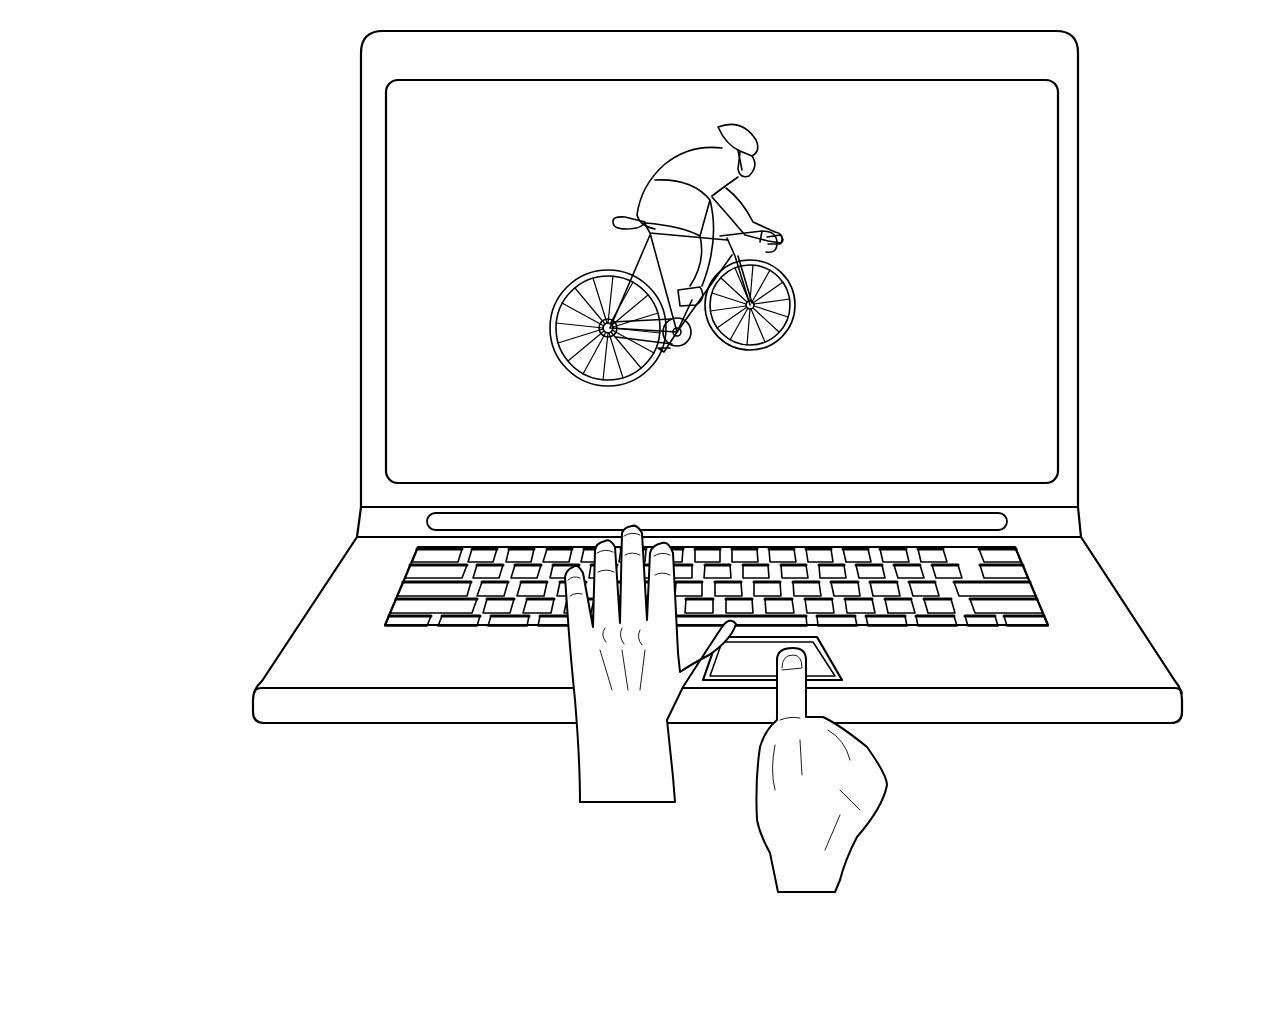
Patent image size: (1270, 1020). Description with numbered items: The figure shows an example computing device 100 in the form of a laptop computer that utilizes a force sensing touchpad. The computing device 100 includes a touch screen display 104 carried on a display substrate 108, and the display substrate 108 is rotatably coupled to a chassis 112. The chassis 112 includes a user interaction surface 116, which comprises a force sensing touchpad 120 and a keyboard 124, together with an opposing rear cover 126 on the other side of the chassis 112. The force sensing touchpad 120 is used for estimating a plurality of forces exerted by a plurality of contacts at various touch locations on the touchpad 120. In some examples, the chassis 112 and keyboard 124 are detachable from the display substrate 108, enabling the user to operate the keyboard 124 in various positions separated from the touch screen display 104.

The computing device 100 is at (283, 120).
The touch screen display 104 is at (983, 168).
The display substrate 108 is at (361, 146).
The chassis 112 is at (1173, 663).
The user interaction surface 116 is at (277, 678).
The force sensing touchpad 120 is at (722, 663).
The keyboard 124 is at (388, 560).
The rear cover 126 is at (1128, 724).